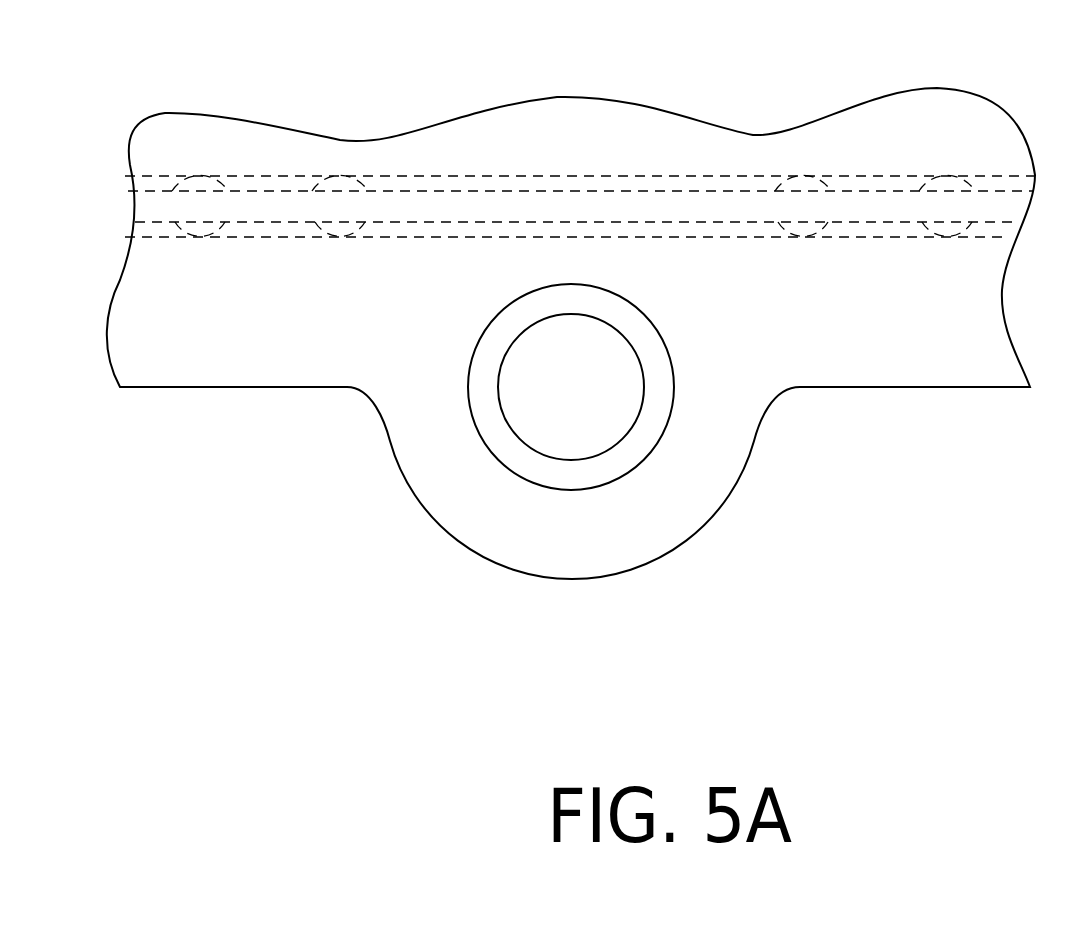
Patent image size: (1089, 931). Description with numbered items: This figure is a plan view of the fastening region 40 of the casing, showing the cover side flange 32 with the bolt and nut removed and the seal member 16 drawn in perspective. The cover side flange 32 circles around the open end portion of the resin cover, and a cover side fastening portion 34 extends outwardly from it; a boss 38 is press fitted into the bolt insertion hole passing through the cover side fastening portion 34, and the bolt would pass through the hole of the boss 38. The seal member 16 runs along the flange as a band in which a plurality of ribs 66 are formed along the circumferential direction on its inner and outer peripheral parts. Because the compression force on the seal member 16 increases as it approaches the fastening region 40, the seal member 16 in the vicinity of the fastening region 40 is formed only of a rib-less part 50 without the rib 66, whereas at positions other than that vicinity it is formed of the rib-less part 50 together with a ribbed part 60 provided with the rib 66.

The seal member 16 is at (698, 62).
The cover side flange 32 is at (251, 355).
The cover side fastening portion 34 is at (565, 582).
The boss 38 is at (498, 337).
The fastening region 40 is at (654, 580).
The rib-less part 50 is at (702, 175).
The ribbed part 60 is at (805, 175).
The rib 66 is at (340, 175).